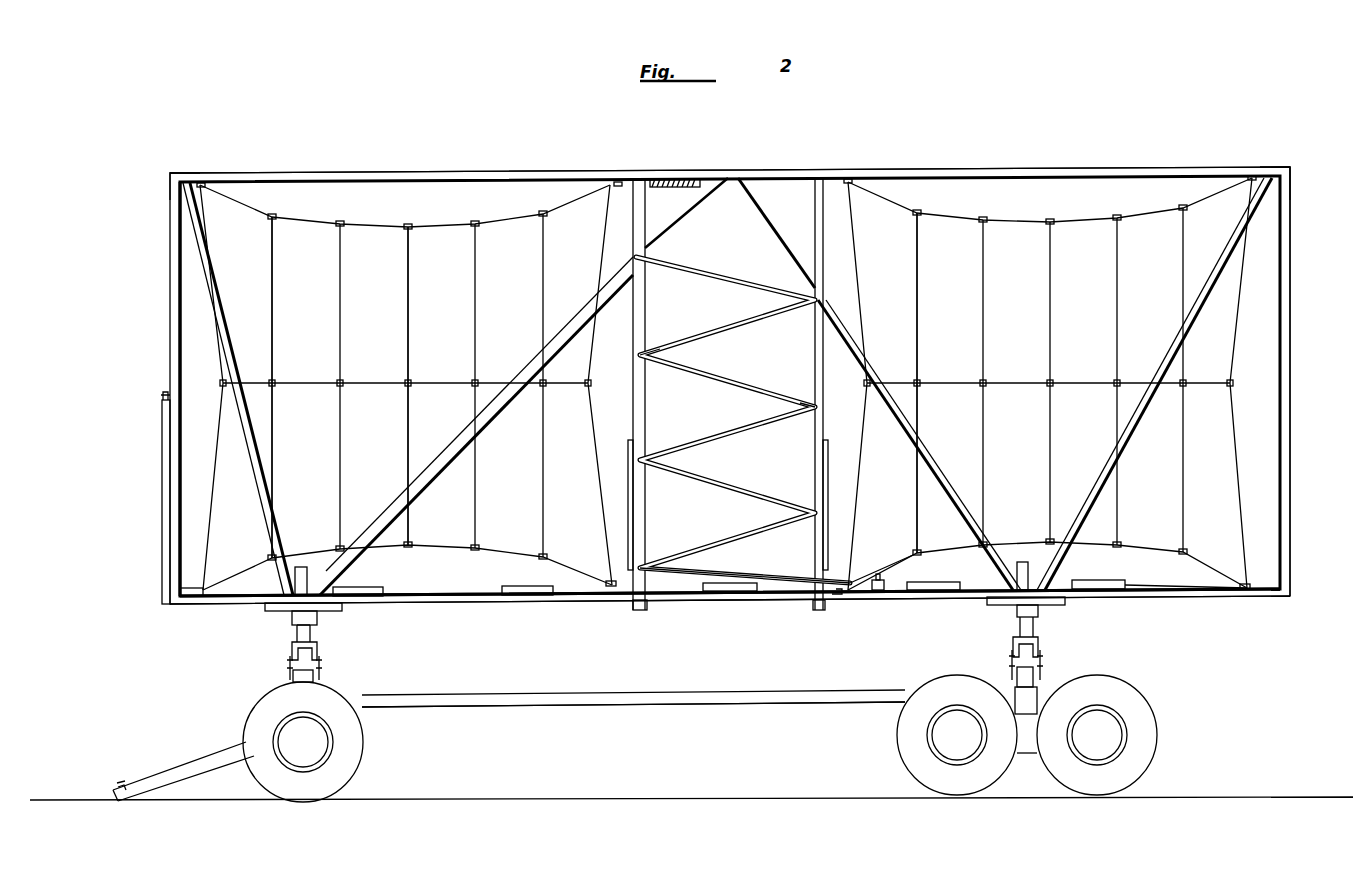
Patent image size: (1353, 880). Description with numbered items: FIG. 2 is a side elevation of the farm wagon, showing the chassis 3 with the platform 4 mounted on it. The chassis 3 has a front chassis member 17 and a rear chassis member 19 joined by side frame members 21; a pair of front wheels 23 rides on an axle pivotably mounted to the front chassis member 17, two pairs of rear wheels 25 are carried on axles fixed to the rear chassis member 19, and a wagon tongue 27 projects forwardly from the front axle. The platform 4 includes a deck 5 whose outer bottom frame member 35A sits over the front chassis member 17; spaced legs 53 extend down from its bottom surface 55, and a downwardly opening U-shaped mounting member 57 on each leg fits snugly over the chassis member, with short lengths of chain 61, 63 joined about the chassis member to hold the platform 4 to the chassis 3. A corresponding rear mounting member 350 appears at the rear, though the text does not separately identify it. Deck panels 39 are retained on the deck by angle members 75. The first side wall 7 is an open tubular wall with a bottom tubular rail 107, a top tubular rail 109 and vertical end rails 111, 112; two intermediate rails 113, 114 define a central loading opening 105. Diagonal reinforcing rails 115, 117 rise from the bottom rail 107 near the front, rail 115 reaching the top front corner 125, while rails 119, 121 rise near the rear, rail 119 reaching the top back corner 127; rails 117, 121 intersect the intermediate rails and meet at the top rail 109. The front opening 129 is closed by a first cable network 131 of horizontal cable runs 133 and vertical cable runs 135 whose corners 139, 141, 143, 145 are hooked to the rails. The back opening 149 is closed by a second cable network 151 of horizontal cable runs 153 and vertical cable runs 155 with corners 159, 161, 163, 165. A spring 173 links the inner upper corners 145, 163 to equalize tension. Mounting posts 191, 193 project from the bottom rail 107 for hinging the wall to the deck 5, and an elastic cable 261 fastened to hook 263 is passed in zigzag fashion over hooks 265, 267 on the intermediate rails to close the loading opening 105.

The chassis 3 is at (598, 720).
The platform 4 is at (150, 276).
The deck 5 is at (526, 608).
The first side wall 7 is at (980, 166).
The front chassis member 17 is at (291, 679).
The rear chassis member 19 is at (1040, 672).
The side frame members 21 is at (752, 692).
The front wheels 23 is at (358, 774).
The rear wheels 25 is at (896, 745).
The wagon tongue 27 is at (202, 764).
The outer main bottom frame member 35A is at (289, 618).
The deck panels 39 is at (686, 582).
The legs 53 is at (320, 632).
The bottom surface 55 is at (296, 630).
The U-shaped mounting member 57 is at (320, 650).
The length of chain 61 is at (286, 660).
The length of chain 63 is at (322, 676).
The angle member 75 is at (530, 584).
The loading opening 105 is at (786, 204).
The bottom tubular rail 107 is at (572, 600).
The top tubular rail 109 is at (504, 172).
The vertical end rail 111 is at (170, 350).
The vertical end rail 112 is at (1291, 342).
The vertical intermediate rail 113 is at (597, 433).
The vertical intermediate rail 114 is at (824, 244).
The diagonal reinforcing rail 115 is at (258, 440).
The diagonal reinforcing rail 117 is at (456, 442).
The diagonal reinforcing rail 119 is at (1130, 426).
The diagonal reinforcing rail 121 is at (925, 440).
The top front corner 125 is at (170, 172).
The top back corner 127 is at (1290, 170).
The front opening 129 is at (296, 205).
The first cable network 131 is at (366, 222).
The horizontal cable runs 133 is at (275, 220).
The vertical cable runs 135 is at (339, 324).
The corner of cable network 139 is at (197, 592).
The corner of cable network 141 is at (611, 582).
The corner of cable network 143 is at (222, 190).
The corner of cable network 145 is at (620, 183).
The back opening 149 is at (1146, 196).
The second cable network 151 is at (995, 222).
The horizontal cable runs 153 is at (1065, 222).
The vertical cable runs 155 is at (984, 326).
The corner of second cable network 159 is at (840, 592).
The corner of second cable network 161 is at (1246, 592).
The corner of second cable network 163 is at (849, 180).
The corner of second cable network 165 is at (1256, 178).
The spring 173 is at (663, 188).
The mounting post 191 is at (302, 566).
The mounting post 193 is at (1023, 560).
The elastic cable 261 is at (684, 475).
The hook 263 is at (878, 580).
The hook 265 is at (648, 357).
The hook 267 is at (812, 407).
The support block 350 is at (1042, 612).